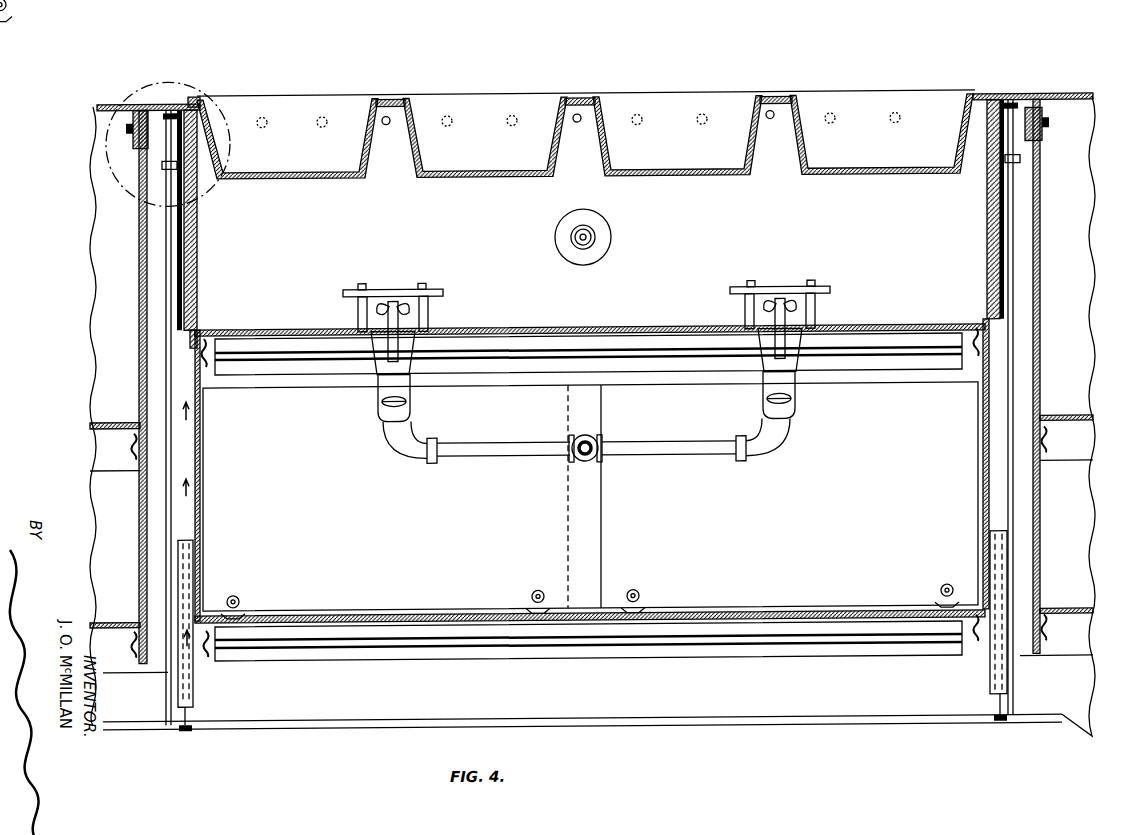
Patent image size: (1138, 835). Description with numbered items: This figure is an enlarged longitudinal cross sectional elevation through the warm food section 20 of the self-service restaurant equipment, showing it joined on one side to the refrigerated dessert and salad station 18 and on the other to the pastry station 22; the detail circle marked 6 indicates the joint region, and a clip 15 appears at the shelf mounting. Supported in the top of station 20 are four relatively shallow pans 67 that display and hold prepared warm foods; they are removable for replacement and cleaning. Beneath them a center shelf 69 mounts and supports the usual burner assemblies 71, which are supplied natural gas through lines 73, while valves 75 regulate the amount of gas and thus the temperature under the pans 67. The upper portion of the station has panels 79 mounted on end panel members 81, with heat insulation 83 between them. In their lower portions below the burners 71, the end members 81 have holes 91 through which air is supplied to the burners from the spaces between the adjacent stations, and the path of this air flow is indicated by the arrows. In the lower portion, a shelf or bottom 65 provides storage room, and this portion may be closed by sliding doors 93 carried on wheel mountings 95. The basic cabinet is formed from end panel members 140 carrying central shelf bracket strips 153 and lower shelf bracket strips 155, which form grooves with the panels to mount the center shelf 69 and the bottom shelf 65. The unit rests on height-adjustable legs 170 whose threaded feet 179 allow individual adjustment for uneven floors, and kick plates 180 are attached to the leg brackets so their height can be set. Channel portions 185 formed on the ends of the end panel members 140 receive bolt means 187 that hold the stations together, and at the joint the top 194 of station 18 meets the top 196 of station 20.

The detail section circle for FIG. 6 is at (113, 100).
The spring clip 15 is at (206, 342).
The refrigerated dessert and salad station 18 is at (97, 103).
The warm food section 20 is at (674, 90).
The pastry station 22 is at (1070, 96).
The shelf or bottom 65 is at (760, 612).
The pans 67 is at (325, 162).
The center shelf 69 is at (867, 325).
The burner assemblies 71 is at (438, 312).
The lines 73 is at (487, 447).
The valves 75 is at (408, 402).
The panels 79 is at (193, 250).
The end panel members 81 is at (199, 485).
The heat insulation 83 is at (190, 220).
The holes 91 is at (200, 400).
The sliding doors 93 is at (402, 541).
The wheel mountings 95 is at (238, 594).
The end panel members 140 is at (140, 318).
The central shelf bracket strips 153 is at (132, 448).
The lower shelf bracket strips 155 is at (206, 650).
The legs 170 is at (205, 695).
The foot 179 is at (192, 729).
The kick plates 180 is at (533, 707).
The channel portions 185 is at (183, 362).
The bolt means 187 is at (143, 150).
The top 194 is at (118, 108).
The top 196 is at (196, 94).